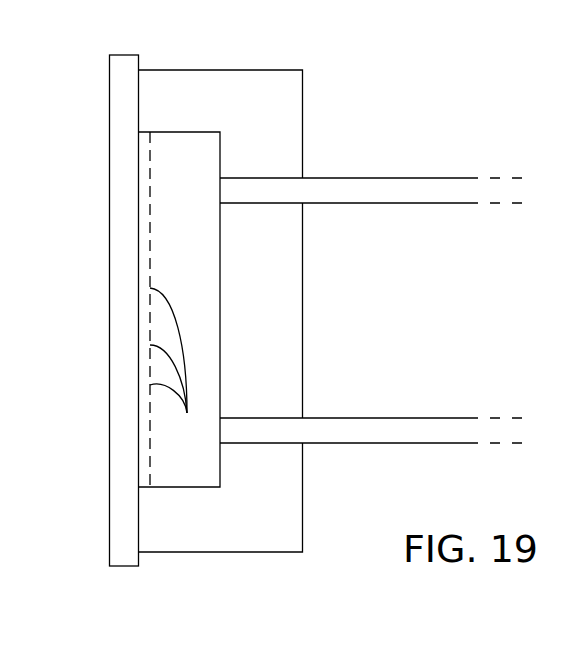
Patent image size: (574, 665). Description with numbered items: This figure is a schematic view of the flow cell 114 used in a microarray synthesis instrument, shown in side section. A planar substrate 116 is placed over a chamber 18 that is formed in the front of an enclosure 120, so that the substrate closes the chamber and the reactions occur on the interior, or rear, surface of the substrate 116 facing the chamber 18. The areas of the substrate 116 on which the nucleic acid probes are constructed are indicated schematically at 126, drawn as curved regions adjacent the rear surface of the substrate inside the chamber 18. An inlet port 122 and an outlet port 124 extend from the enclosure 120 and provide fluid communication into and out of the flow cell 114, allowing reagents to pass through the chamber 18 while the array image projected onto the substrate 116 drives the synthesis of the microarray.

The flow cell 114 is at (226, 585).
The planar substrate 116 is at (109, 567).
The enclosure 120 is at (221, 70).
The chamber 18 is at (181, 135).
The areas of the substrate on which nucleic acid probes are constructed 126 is at (181, 365).
The inlet port 122 is at (406, 178).
The outlet port 124 is at (412, 418).